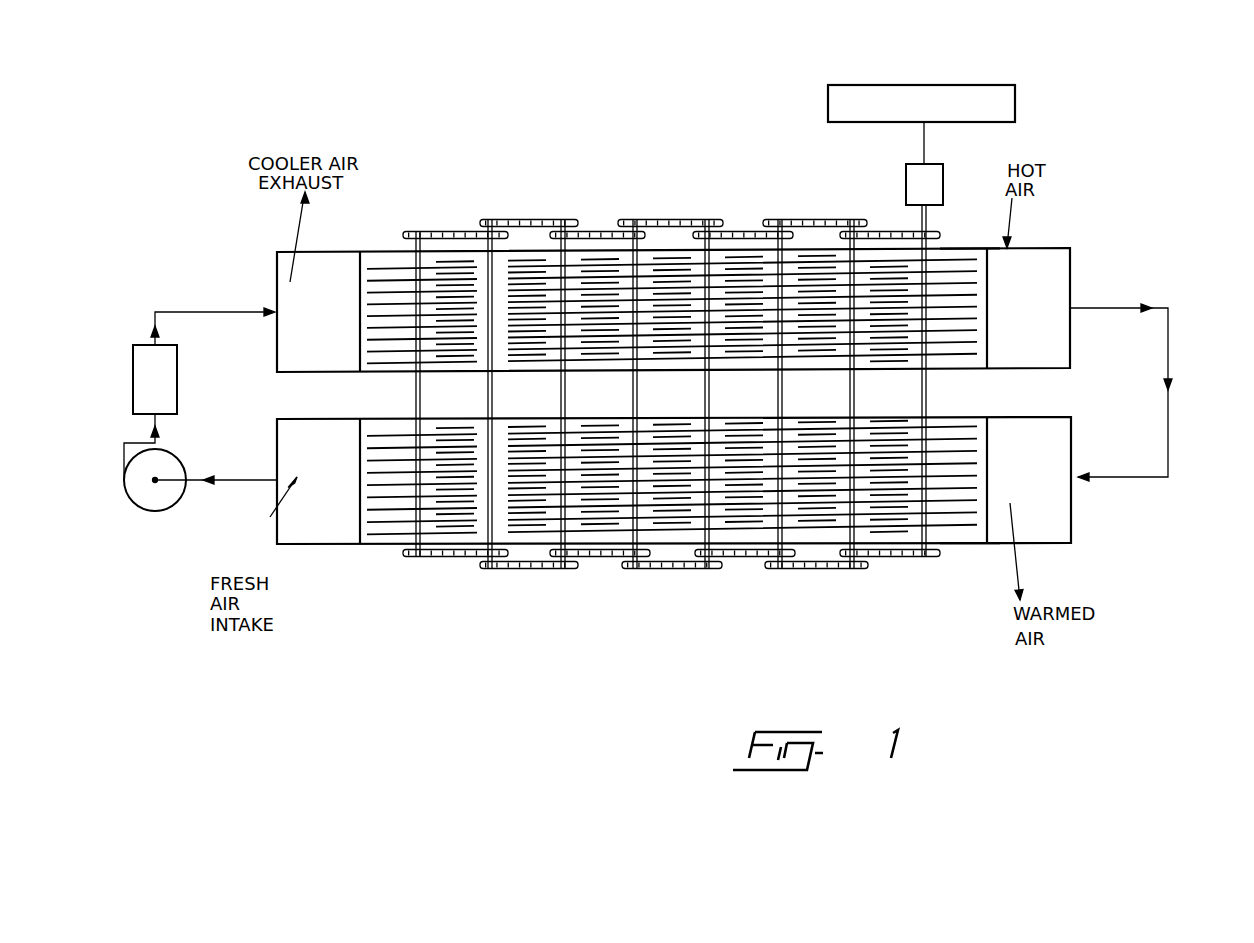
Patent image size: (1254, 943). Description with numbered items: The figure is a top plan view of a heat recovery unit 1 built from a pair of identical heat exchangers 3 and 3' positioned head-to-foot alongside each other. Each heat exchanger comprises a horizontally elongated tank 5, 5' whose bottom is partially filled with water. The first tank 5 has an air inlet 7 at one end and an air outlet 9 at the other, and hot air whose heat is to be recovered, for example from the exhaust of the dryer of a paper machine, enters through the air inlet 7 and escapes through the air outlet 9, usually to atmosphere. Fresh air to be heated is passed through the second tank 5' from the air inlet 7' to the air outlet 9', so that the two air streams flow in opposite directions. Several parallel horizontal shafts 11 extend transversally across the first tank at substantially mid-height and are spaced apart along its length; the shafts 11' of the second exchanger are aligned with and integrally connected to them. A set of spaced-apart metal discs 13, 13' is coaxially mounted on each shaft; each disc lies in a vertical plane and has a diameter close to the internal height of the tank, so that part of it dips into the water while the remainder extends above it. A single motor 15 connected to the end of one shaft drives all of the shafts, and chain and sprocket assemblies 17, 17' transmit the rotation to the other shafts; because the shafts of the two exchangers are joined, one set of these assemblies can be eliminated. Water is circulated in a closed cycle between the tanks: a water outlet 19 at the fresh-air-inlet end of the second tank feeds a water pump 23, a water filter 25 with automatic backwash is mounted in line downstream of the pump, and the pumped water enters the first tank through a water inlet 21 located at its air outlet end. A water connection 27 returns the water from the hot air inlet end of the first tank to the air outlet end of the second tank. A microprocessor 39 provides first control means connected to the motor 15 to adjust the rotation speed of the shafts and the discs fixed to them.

The heat recovery unit 1 is at (1093, 190).
The first heat exchanger 3 is at (673, 278).
The second heat exchanger 3' is at (695, 509).
The tank 5 is at (970, 225).
The tank 5' is at (971, 564).
The air inlet 7 is at (1048, 303).
The air inlet 7' is at (352, 511).
The air outlet 9 is at (341, 291).
The air outlet 9' is at (1063, 480).
The horizontal shafts 11 is at (694, 284).
The horizontal shafts 11' is at (671, 516).
The metal discs 13 is at (672, 301).
The metal discs 13' is at (672, 519).
The motor 15 is at (943, 178).
The chain and sprocket assemblies 17 is at (671, 179).
The chain and sprocket assemblies 17' is at (671, 601).
The water outlet 19 is at (232, 482).
The water inlet 21 is at (213, 310).
The water pump 23 is at (152, 510).
The water filter 25 is at (177, 368).
The water connection 27 is at (1152, 392).
The microprocessor 39 is at (1015, 95).